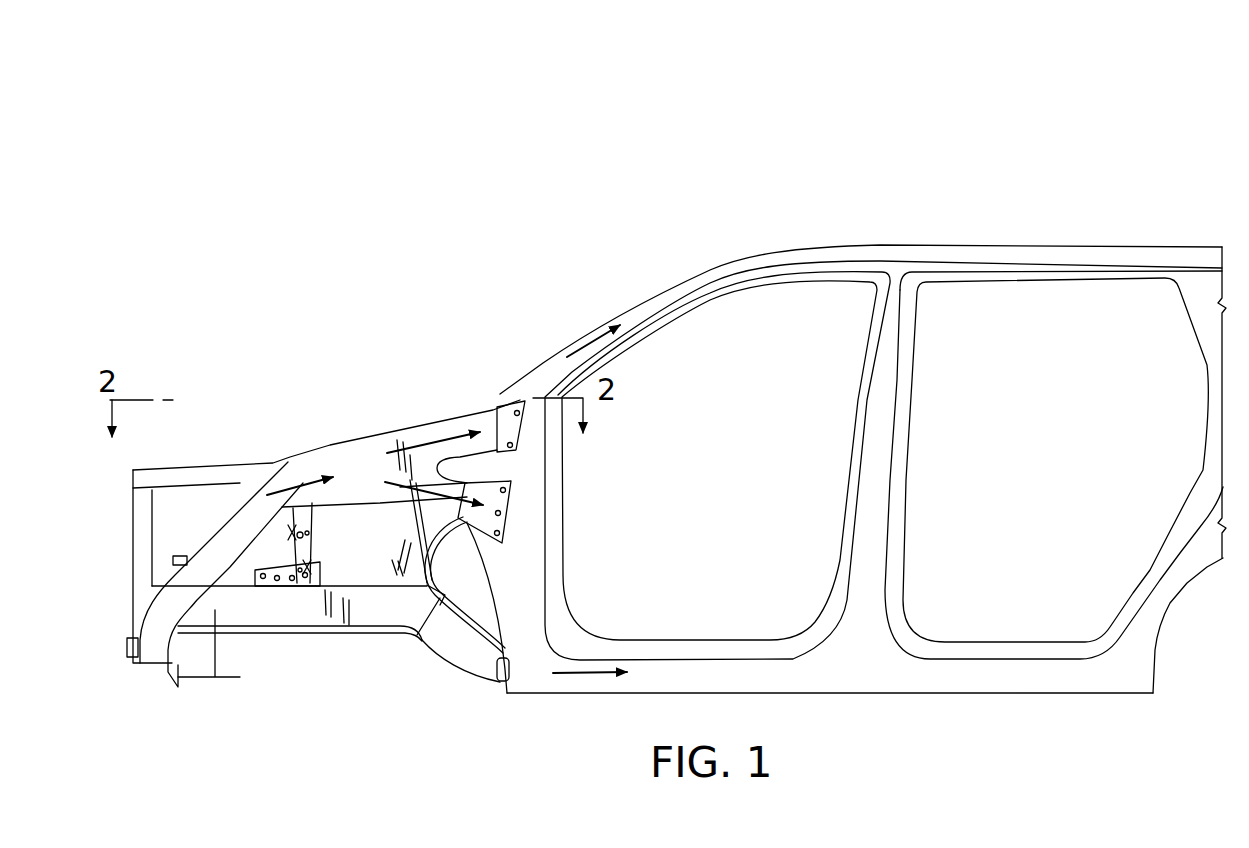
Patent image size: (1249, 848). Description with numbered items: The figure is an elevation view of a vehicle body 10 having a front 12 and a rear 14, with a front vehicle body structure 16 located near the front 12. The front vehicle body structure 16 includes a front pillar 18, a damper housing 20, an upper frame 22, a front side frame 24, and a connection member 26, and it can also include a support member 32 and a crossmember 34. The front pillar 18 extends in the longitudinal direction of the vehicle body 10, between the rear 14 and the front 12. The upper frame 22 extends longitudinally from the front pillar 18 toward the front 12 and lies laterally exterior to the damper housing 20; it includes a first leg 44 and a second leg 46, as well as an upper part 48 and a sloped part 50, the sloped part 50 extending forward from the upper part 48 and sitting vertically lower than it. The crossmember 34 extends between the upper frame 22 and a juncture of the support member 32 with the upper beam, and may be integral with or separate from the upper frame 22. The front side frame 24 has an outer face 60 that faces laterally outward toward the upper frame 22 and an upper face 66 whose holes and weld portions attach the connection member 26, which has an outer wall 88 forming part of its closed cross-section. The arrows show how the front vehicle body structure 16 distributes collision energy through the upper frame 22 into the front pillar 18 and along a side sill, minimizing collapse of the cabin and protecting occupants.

The vehicle body 10 is at (645, 170).
The front 12 is at (196, 387).
The rear 14 is at (1170, 213).
The front vehicle body structure 16 is at (346, 376).
The front pillar 18 is at (643, 307).
The damper housing 20 is at (330, 443).
The upper frame 22 is at (368, 442).
The front side frame 24 is at (283, 622).
The connection member 26 is at (307, 530).
The support member 32 is at (140, 528).
The crossmember 34 is at (180, 472).
The first leg 44 is at (461, 430).
The second leg 46 is at (497, 463).
The upper part 48 is at (377, 463).
The sloped part 50 is at (212, 547).
The outer face 60 is at (210, 612).
The upper face 66 is at (233, 580).
The outer wall 88 is at (267, 590).